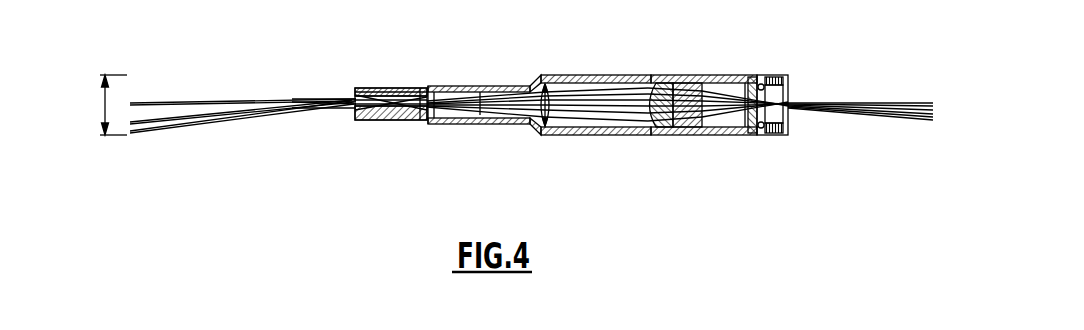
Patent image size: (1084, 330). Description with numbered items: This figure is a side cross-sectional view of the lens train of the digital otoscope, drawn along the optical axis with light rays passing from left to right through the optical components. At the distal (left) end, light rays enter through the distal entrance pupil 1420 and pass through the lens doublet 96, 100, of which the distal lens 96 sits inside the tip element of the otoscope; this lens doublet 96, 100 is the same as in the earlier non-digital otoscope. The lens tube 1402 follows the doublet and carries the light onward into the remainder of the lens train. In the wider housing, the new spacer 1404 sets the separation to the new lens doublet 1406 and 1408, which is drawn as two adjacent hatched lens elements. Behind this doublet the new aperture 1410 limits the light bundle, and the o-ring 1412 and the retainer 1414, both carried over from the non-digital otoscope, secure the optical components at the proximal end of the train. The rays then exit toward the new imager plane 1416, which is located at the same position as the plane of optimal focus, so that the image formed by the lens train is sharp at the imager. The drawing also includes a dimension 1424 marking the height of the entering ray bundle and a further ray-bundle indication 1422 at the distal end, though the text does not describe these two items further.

The distal lens 96 is at (358, 121).
The lens doublet lens 100 is at (413, 121).
The lens tube 1402 is at (470, 86).
The spacer 1404 is at (582, 136).
The lens doublet 1406 is at (663, 83).
The lens doublet 1408 is at (687, 83).
The aperture 1410 is at (717, 136).
The o-ring 1412 is at (762, 75).
The retainer 1414 is at (775, 78).
The imager plane 1416 is at (932, 122).
The distal entrance pupil 1420 is at (327, 81).
The input light rays 1422 is at (237, 137).
The beam width dimension 1424 is at (106, 100).